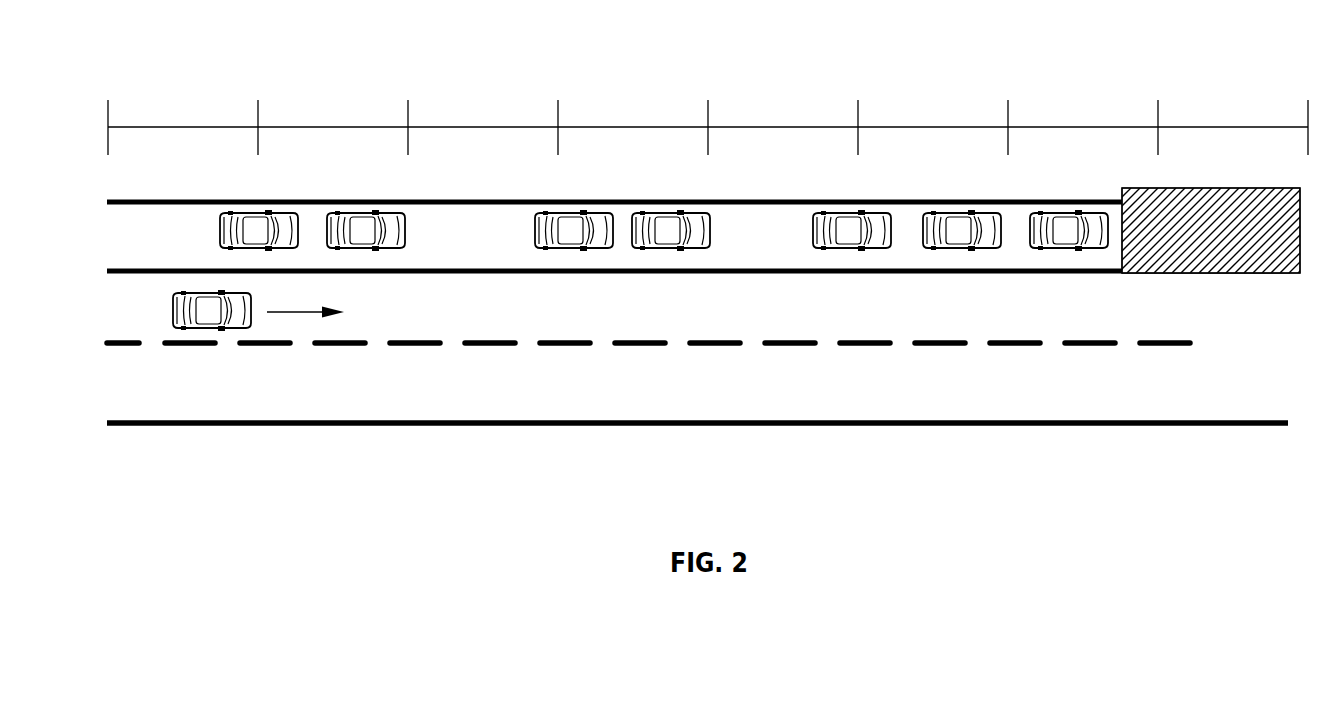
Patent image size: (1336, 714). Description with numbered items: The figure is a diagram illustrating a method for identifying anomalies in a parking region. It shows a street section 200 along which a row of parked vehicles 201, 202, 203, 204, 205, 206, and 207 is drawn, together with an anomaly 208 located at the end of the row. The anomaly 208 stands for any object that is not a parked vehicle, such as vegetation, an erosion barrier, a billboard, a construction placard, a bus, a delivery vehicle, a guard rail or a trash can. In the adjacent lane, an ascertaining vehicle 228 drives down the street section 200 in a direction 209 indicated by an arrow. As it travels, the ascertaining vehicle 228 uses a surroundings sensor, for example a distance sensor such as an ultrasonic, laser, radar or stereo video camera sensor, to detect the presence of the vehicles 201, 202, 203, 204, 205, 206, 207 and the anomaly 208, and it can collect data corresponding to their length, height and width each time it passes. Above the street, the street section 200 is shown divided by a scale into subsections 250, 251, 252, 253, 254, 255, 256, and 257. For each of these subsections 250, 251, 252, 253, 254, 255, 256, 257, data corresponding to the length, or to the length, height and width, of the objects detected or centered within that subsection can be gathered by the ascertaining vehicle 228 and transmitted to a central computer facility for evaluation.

The street section 200 is at (168, 40).
The vehicle 201 is at (259, 240).
The vehicle 202 is at (366, 240).
The vehicle 203 is at (574, 240).
The vehicle 204 is at (671, 240).
The vehicle 205 is at (852, 240).
The vehicle 206 is at (962, 239).
The vehicle 207 is at (1069, 240).
The anomaly 208 is at (1186, 230).
The direction 209 is at (327, 315).
The ascertaining vehicle 228 is at (184, 310).
The subsection 250 is at (183, 126).
The subsection 251 is at (333, 126).
The subsection 252 is at (483, 126).
The subsection 253 is at (633, 126).
The subsection 254 is at (783, 126).
The subsection 255 is at (933, 126).
The subsection 256 is at (1083, 126).
The subsection 257 is at (1233, 126).